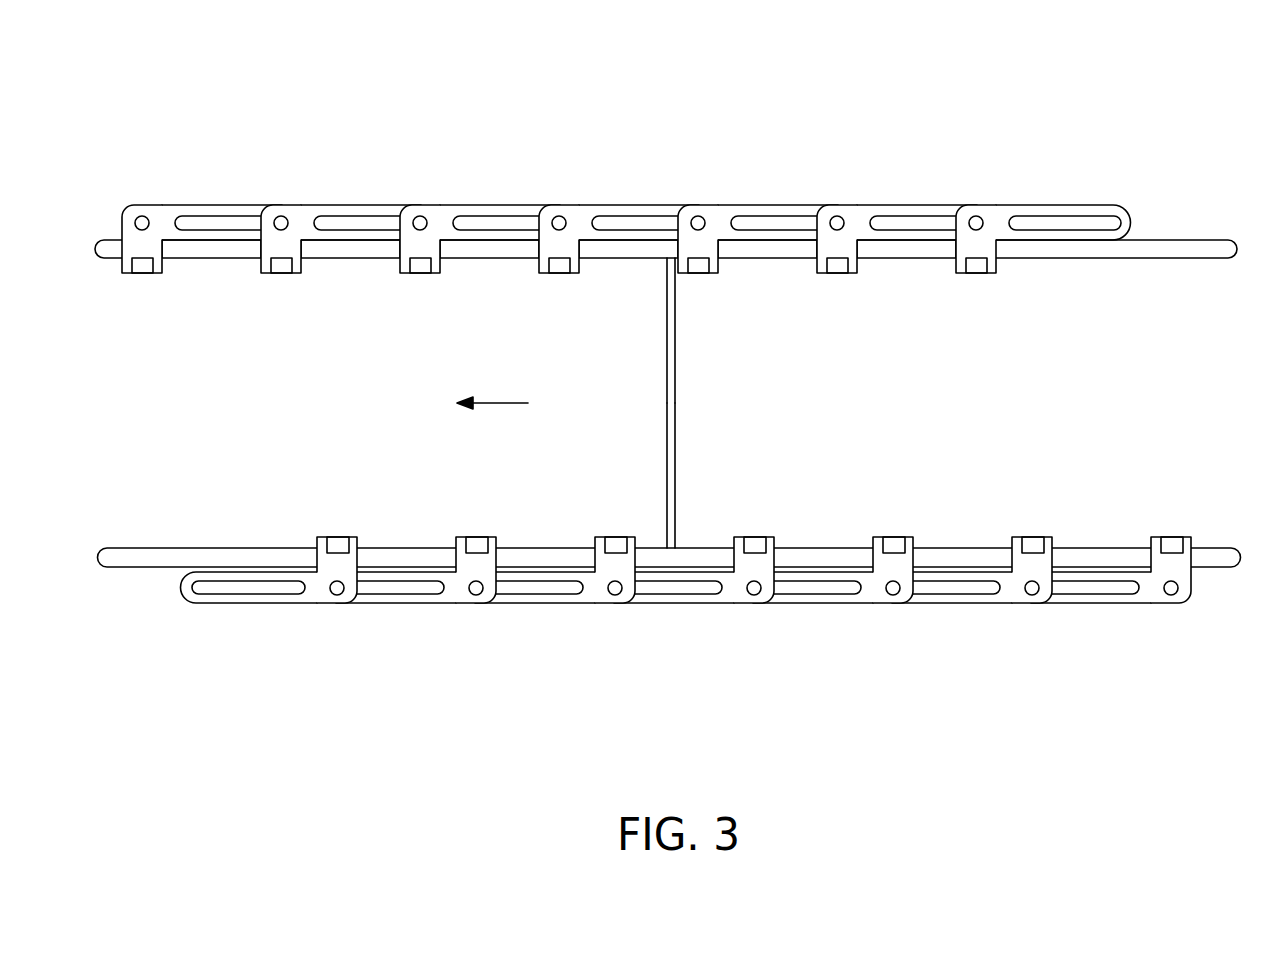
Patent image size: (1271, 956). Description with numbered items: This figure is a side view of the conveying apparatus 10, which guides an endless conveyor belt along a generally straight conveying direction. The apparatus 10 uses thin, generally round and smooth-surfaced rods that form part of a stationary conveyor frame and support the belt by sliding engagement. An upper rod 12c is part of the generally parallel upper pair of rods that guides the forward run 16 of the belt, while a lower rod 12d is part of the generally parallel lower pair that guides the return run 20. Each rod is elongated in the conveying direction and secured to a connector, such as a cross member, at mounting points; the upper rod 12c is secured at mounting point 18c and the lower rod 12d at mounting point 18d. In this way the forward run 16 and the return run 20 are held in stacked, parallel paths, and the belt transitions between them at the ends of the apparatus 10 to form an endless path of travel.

The conveying apparatus 10 is at (668, 369).
The rod 12c is at (1137, 258).
The rod 12d is at (1125, 547).
The forward run 16 is at (666, 229).
The mounting point 18c is at (660, 262).
The mounting point 18d is at (662, 539).
The return run 20 is at (669, 589).